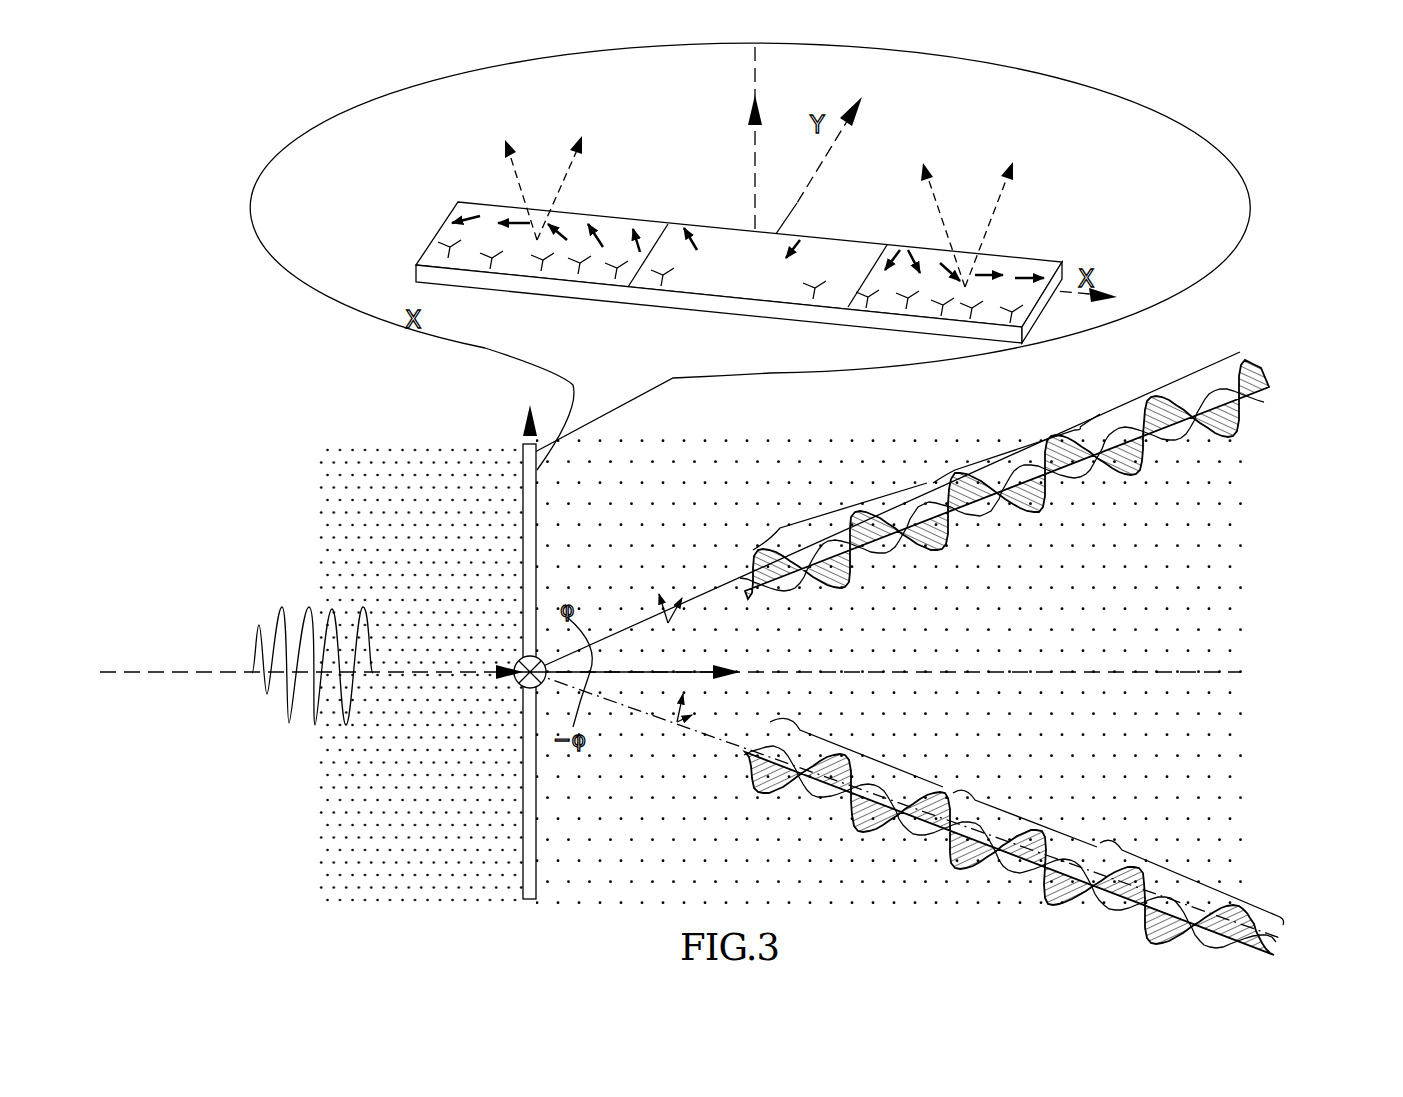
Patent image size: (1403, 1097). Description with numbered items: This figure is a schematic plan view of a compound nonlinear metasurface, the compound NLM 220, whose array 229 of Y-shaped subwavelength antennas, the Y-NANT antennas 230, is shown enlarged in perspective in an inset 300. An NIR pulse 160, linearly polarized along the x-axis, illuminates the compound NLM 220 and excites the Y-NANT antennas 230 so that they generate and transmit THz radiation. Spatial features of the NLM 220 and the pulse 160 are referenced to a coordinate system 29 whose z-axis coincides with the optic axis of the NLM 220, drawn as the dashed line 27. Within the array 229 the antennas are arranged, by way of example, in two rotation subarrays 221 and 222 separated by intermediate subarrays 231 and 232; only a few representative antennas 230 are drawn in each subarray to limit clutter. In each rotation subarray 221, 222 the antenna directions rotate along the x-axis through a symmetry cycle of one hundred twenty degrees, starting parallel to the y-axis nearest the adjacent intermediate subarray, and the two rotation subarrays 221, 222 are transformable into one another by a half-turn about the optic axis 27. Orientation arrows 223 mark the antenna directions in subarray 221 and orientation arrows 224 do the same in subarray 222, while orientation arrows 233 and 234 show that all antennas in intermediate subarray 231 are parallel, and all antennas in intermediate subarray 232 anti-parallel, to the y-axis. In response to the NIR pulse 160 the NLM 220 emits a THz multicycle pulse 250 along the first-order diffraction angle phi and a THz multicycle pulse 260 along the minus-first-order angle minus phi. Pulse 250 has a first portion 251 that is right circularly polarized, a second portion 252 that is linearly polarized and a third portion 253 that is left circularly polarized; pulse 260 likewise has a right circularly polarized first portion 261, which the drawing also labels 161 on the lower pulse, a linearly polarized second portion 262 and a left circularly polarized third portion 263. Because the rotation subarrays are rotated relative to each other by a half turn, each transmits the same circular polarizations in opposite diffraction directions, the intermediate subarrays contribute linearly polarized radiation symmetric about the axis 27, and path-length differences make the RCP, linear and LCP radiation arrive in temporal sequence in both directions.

The inset 300 is at (362, 102).
The optic axis 27 is at (757, 68).
The compound NLM 220 is at (1065, 250).
The array 229 is at (412, 240).
The rotation subarray 221 is at (607, 214).
The intermediate subarray 231 is at (710, 225).
The orientation arrows 233 is at (643, 447).
The orientation arrows 234 is at (752, 322).
The intermediate subarray 232 is at (840, 243).
The rotation subarray 222 is at (912, 247).
The Y-NANT subwavelength antennas 230 is at (448, 256).
The orientation arrows 223 is at (480, 215).
The orientation arrows 224 is at (897, 250).
The first portion 261 is at (507, 162).
The third portion 263 is at (568, 163).
The third portion 253 is at (937, 203).
The first portion 251 is at (990, 213).
The second portion 252 is at (1006, 428).
The second portion 262 is at (1025, 796).
The right circularly polarized portion (m=-1) 161 is at (1192, 866).
The THz multicycle pulse 250 is at (1283, 402).
The THz multicycle pulse 260 is at (1270, 880).
The coordinate system 29 is at (511, 657).
The NIR pulse 160 is at (323, 615).